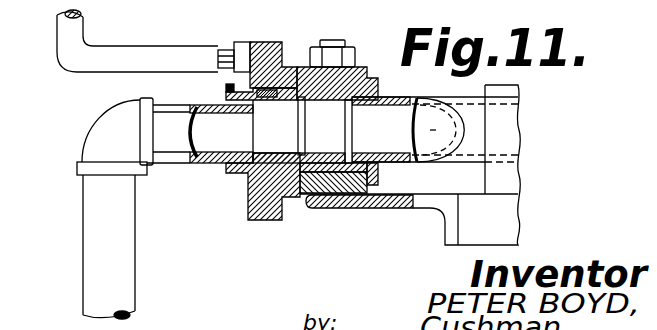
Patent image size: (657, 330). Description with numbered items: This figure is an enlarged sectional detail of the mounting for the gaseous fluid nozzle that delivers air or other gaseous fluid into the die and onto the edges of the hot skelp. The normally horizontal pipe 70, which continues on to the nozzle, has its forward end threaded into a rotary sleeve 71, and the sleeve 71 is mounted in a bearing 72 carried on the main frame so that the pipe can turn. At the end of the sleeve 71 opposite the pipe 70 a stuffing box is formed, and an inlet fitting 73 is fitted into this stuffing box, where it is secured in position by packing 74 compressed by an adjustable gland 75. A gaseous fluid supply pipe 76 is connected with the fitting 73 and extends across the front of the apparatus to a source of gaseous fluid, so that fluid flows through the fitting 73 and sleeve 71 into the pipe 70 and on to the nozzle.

The pipe 70 is at (447, 122).
The rotary sleeve 71 is at (378, 173).
The bearing 72 is at (330, 183).
The inlet fitting 73 is at (212, 137).
The packing 74 is at (264, 176).
The adjustable gland 75 is at (228, 91).
The gaseous fluid supply pipe 76 is at (98, 269).